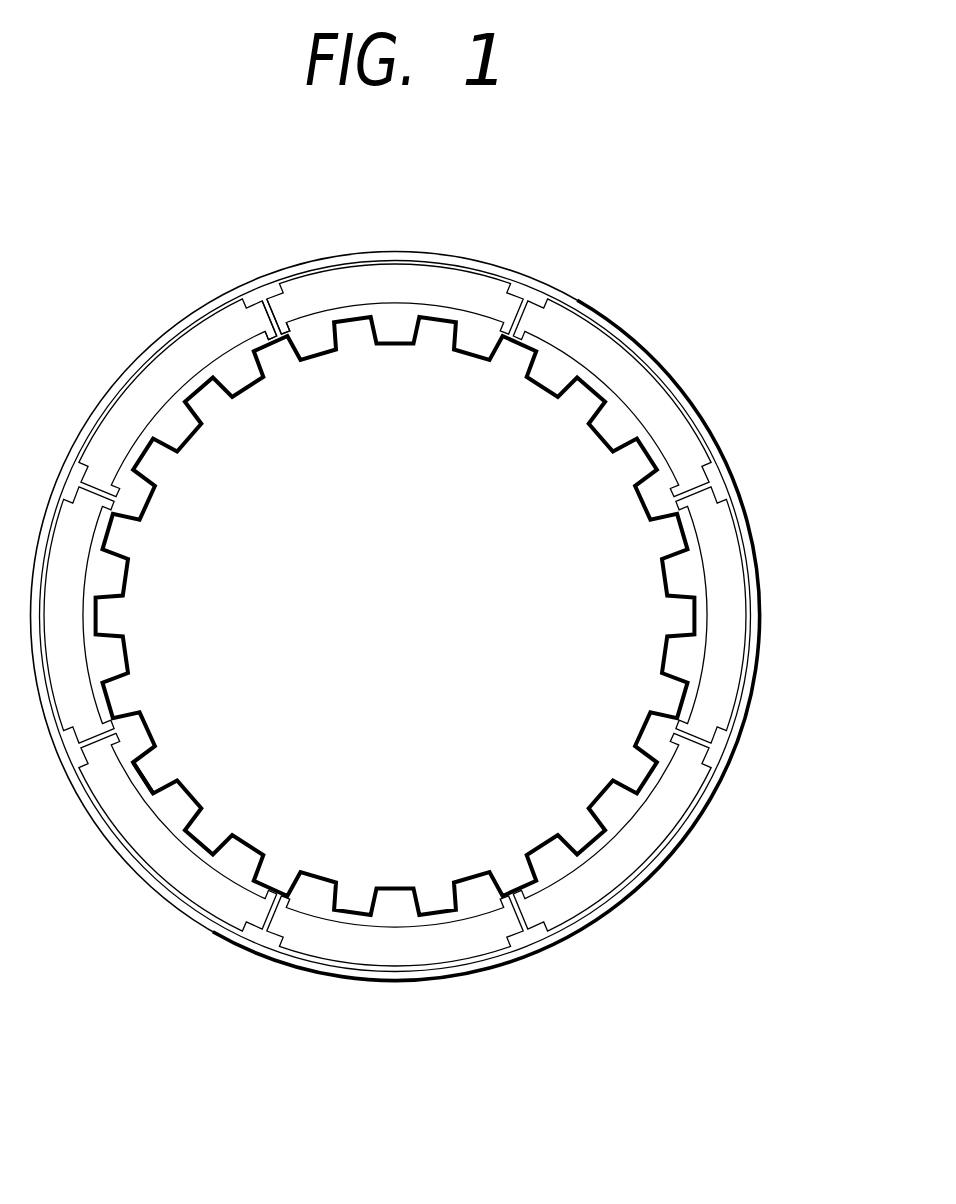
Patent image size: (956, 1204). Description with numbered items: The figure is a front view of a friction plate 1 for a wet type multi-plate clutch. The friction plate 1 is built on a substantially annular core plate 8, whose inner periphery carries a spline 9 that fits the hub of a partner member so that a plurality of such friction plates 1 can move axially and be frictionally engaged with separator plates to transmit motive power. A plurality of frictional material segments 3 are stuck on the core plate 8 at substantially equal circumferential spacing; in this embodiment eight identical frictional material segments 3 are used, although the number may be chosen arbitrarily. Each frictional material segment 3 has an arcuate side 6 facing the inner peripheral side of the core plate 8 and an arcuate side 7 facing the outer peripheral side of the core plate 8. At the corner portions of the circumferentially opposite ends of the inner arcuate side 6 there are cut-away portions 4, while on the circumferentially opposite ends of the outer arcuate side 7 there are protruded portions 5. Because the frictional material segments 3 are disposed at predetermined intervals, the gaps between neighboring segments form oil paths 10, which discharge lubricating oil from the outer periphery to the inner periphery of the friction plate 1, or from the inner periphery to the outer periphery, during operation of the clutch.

The friction plate 1 is at (680, 219).
The frictional material segment 3 is at (416, 266).
The cut-away portion 4 is at (273, 323).
The protruded portion 5 is at (511, 270).
The arcuate side 6 is at (222, 348).
The arcuate side 7 is at (148, 357).
The core plate 8 is at (100, 660).
The spline 9 is at (142, 773).
The oil path 10 is at (737, 477).